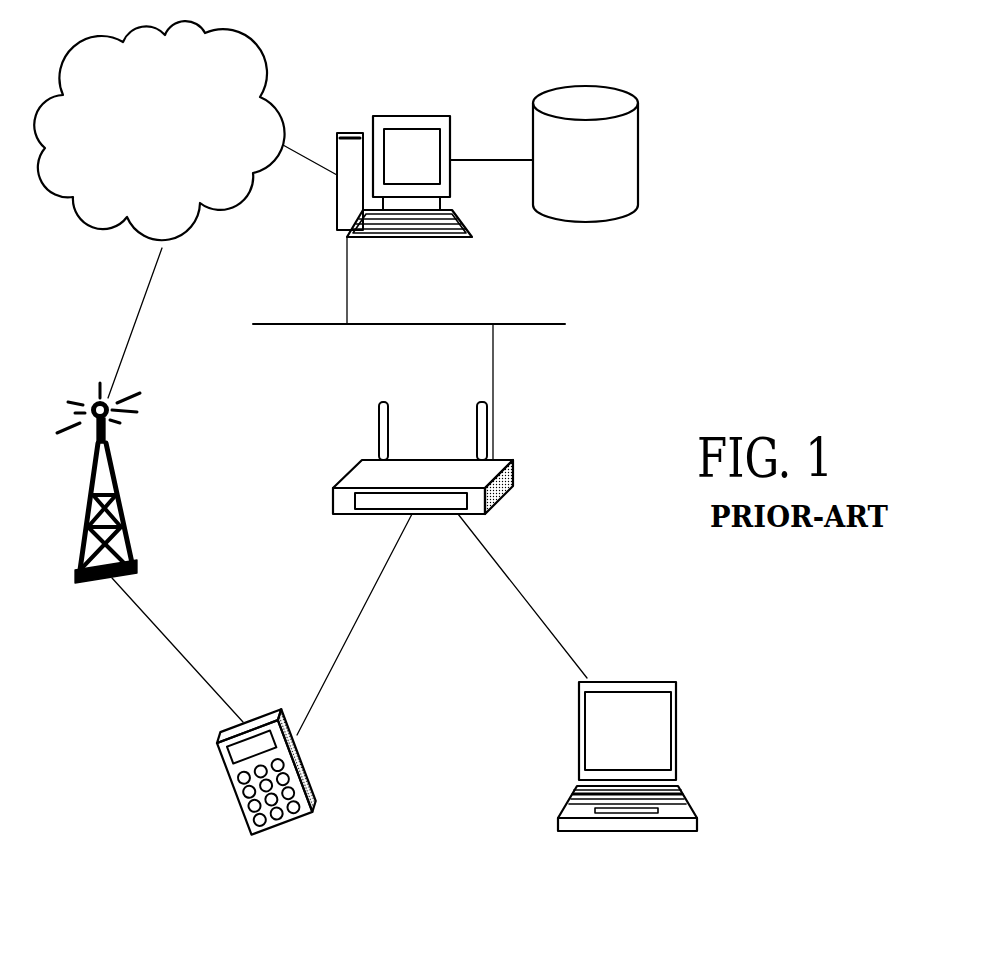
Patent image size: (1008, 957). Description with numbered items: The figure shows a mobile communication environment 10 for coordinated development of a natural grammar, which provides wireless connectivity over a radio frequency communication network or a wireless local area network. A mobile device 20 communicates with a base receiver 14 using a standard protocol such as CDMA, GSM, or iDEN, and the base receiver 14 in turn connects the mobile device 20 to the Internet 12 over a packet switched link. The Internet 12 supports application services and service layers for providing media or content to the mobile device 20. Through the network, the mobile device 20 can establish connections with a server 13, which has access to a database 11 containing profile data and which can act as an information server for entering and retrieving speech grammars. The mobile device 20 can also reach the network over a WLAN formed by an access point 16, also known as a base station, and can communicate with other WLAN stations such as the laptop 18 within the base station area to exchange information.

The mobile communication environment 10 is at (780, 296).
The database 11 is at (587, 84).
The Internet 12 is at (193, 220).
The server 13 is at (443, 114).
The base receiver 14 is at (118, 485).
The access point 16 is at (502, 460).
The laptop 18 is at (647, 678).
The mobile device 20 is at (273, 708).